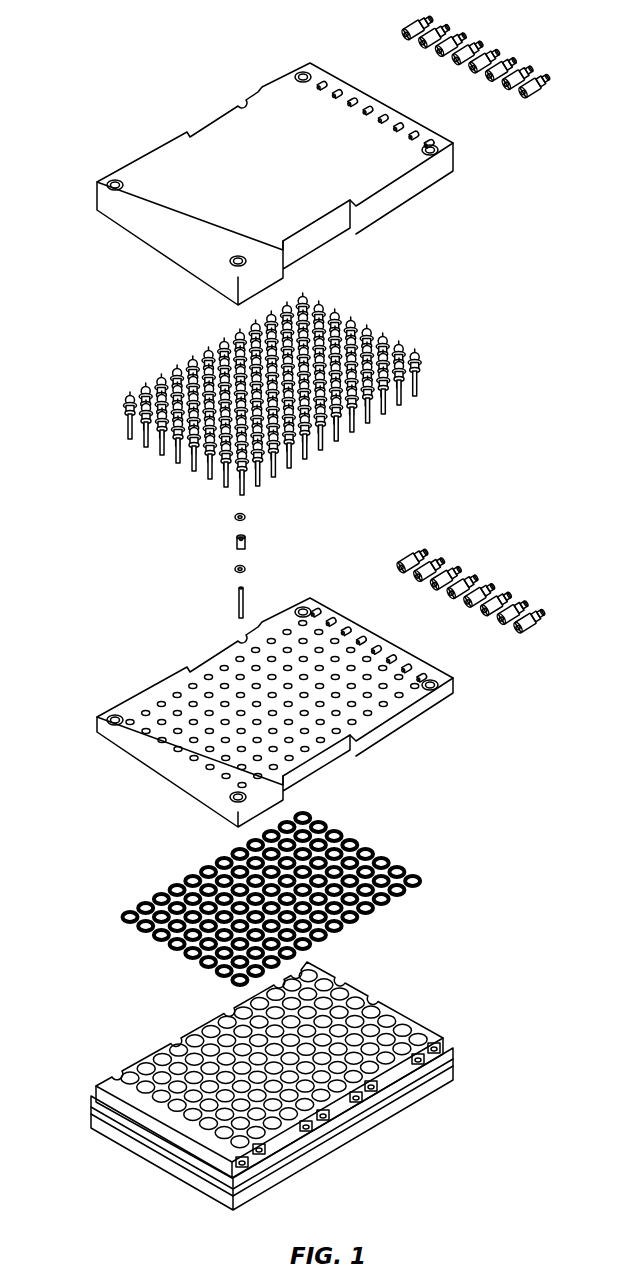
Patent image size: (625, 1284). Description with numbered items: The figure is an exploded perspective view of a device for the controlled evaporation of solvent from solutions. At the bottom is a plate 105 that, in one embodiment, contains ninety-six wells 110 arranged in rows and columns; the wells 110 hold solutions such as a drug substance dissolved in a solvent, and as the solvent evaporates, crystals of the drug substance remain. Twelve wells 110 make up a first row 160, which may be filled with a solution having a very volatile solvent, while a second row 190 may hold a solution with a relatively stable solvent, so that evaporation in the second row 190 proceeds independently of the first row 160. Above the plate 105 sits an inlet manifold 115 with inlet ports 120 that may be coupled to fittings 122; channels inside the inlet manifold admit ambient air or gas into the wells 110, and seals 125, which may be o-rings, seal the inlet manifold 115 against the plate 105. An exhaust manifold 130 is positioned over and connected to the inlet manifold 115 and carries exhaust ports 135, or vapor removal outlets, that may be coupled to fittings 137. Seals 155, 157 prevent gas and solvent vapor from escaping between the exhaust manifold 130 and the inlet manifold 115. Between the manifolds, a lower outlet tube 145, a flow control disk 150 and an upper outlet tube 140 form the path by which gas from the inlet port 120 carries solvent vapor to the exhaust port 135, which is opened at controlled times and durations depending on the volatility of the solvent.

The plate 105 is at (413, 1022).
The wells 110 is at (322, 986).
The inlet manifold 115 is at (455, 682).
The inlet ports 120 is at (350, 622).
The fittings 122 is at (535, 612).
The seals 125 is at (417, 882).
The exhaust manifold 130 is at (443, 163).
The exhaust ports 135 is at (362, 88).
The fittings 137 is at (487, 52).
The upper outlet tube 140 is at (238, 495).
The lower outlet tube 145 is at (237, 600).
The flow control disk 150 is at (237, 547).
The seal 155 is at (250, 516).
The seal 157 is at (250, 568).
The first row 160 is at (90, 1100).
The second row 190 is at (90, 1120).